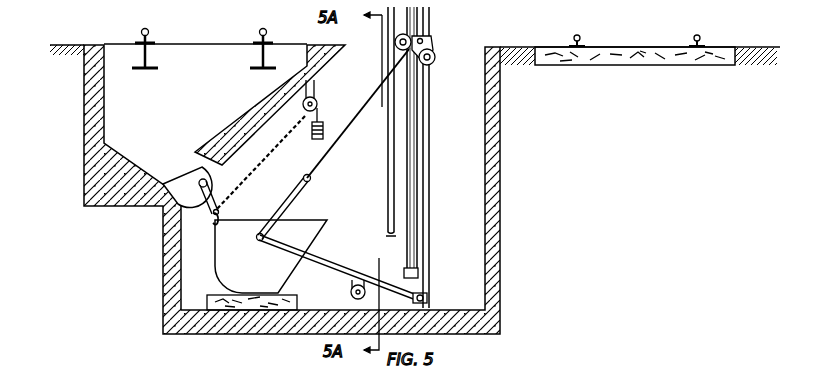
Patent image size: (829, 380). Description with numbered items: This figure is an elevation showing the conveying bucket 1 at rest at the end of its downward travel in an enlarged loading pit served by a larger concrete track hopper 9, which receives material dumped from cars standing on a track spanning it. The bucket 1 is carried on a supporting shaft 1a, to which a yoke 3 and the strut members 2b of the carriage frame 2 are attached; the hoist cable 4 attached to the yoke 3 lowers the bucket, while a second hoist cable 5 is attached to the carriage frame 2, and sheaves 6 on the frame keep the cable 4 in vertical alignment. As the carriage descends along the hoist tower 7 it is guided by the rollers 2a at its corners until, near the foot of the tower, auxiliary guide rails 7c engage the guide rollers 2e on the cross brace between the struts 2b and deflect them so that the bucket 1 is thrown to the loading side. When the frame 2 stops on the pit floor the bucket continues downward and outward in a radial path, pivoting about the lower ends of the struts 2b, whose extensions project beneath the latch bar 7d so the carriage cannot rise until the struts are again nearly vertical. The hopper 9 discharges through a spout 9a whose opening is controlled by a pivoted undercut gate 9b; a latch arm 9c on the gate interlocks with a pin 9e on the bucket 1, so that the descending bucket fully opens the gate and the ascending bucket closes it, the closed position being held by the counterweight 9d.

The conveying bucket 1 is at (267, 265).
The conveying bucket supporting shaft 1a is at (263, 243).
The carriage frame 2 is at (421, 200).
The guide rollers of frame 2a is at (431, 42).
The strut members 2b is at (333, 260).
The guide rollers of brace 2e is at (350, 290).
The yoke 3 is at (276, 207).
The hoist cable 4 is at (333, 143).
The hoist cable attached to carriage frame 5 is at (432, 13).
The sheaves 6 is at (394, 35).
The hoist tower 7 is at (431, 130).
The auxiliary guide rails 7c is at (388, 202).
The latch bar 7d is at (430, 298).
The track hopper 9 is at (238, 97).
The spout 9a is at (200, 168).
The gate 9b is at (183, 232).
The latch arm 9c is at (210, 214).
The counterweight 9d is at (320, 126).
The pin 9e is at (220, 222).